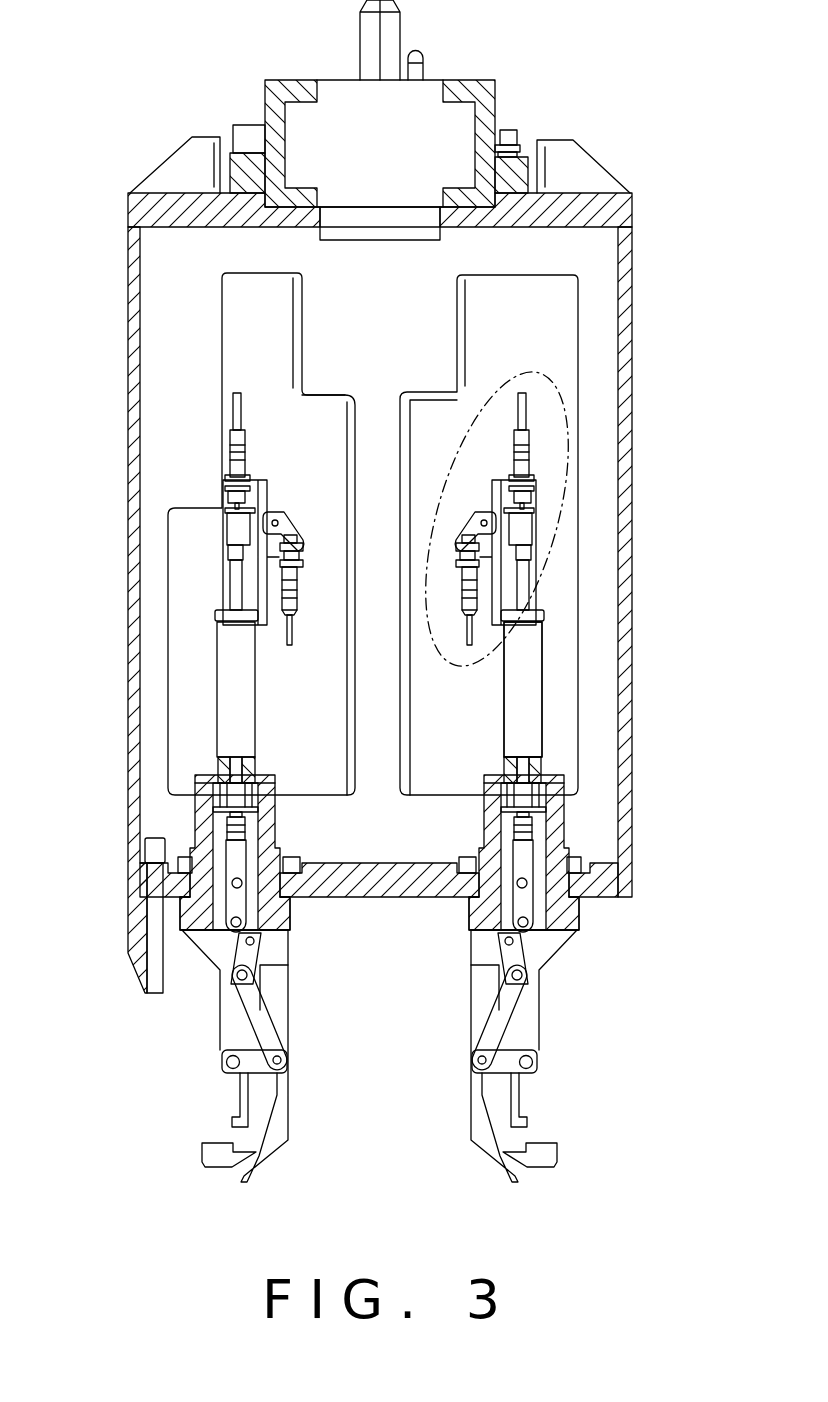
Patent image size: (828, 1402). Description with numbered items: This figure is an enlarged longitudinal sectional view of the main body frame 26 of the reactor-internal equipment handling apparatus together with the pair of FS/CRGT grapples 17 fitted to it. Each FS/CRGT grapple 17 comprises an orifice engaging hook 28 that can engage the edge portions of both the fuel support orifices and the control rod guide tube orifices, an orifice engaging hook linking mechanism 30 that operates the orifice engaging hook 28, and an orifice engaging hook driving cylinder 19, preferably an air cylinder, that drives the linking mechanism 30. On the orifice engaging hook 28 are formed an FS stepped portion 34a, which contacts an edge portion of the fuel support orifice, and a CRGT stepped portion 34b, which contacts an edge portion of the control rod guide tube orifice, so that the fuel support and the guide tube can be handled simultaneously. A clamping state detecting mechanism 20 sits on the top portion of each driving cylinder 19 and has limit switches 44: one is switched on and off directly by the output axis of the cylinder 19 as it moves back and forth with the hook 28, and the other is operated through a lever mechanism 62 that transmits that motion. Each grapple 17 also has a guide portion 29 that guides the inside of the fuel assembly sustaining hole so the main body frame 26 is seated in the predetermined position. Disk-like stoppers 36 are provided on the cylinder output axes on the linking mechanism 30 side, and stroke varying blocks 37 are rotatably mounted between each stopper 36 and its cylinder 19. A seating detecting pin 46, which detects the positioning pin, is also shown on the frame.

The FS/CRGT grapple 17 is at (210, 657).
The orifice engaging hook driving cylinder 19 is at (513, 710).
The clamping state detecting mechanism 20 is at (499, 378).
The main body frame 26 is at (634, 268).
The orifice engaging hook 28 is at (505, 1065).
The guide portion 29 is at (565, 910).
The orifice engaging hook linking mechanism 30 is at (508, 957).
The FS stepped portion 34a is at (238, 1117).
The CRGT stepped portion 34b is at (208, 1150).
The disk-like stopper 36 is at (507, 810).
The stroke varying block 37 is at (507, 790).
The limit switch 44 is at (530, 437).
The seating detecting pin 46 is at (158, 950).
The lever mechanism 62 is at (466, 515).